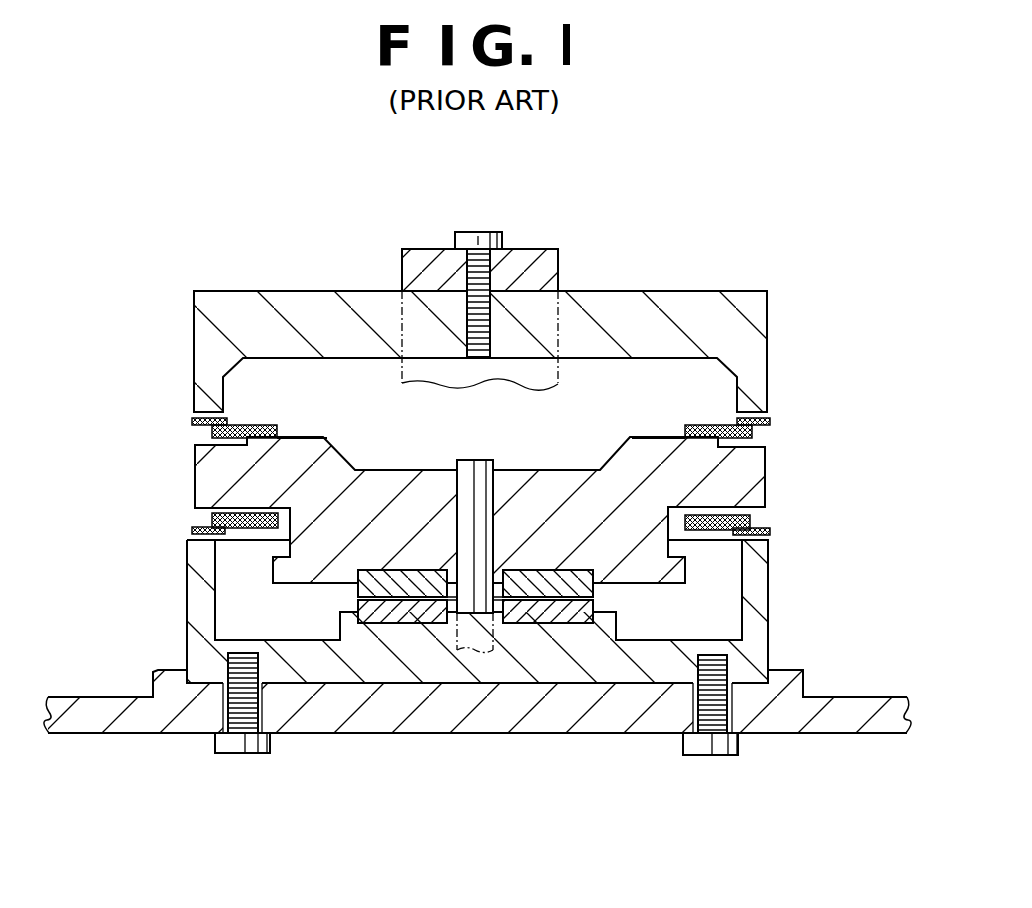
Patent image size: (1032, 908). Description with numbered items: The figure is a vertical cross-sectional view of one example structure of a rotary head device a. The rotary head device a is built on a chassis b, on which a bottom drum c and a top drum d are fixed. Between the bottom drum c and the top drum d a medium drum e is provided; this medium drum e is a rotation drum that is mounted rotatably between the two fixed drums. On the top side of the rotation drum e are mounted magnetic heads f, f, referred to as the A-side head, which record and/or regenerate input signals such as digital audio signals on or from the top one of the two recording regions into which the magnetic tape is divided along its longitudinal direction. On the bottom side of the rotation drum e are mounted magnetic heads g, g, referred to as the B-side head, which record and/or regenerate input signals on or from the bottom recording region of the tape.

The rotary head device a is at (758, 238).
The chassis b is at (468, 723).
The bottom drum c is at (767, 597).
The top drum d is at (757, 340).
The medium drum e is at (753, 477).
The magnetic heads (A-side head) f is at (192, 421).
The magnetic heads (B-side head) g is at (192, 530).